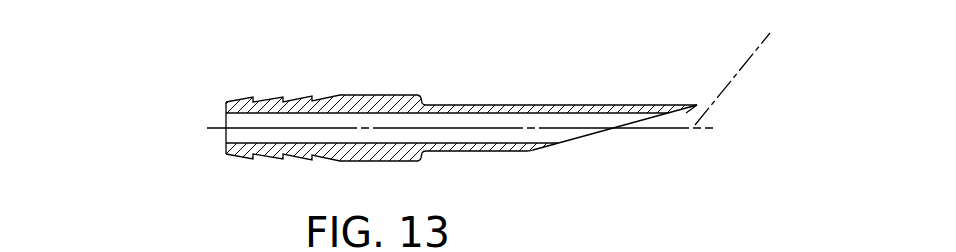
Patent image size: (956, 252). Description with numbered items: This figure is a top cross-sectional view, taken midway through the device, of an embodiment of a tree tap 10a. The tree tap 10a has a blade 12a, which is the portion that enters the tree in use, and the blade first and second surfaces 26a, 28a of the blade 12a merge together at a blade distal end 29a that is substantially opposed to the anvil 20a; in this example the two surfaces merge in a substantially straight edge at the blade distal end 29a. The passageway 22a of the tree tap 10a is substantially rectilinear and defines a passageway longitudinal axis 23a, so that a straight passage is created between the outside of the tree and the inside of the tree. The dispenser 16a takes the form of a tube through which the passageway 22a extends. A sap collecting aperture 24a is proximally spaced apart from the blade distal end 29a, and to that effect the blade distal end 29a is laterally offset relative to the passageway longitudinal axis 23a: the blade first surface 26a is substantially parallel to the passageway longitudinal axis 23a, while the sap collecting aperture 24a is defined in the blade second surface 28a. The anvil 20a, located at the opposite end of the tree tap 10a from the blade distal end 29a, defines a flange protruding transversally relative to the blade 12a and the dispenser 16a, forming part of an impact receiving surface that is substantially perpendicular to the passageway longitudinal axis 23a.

The tree tap 10a is at (438, 127).
The blade 12a is at (486, 133).
The dispenser 16a is at (243, 155).
The anvil 20a is at (413, 97).
The passageway 22a is at (470, 143).
The passageway longitudinal axis 23a is at (751, 73).
The sap collecting aperture 24a is at (550, 145).
The blade first surface 26a is at (515, 104).
The blade second surface 28a is at (535, 152).
The blade distal end 29a is at (698, 104).